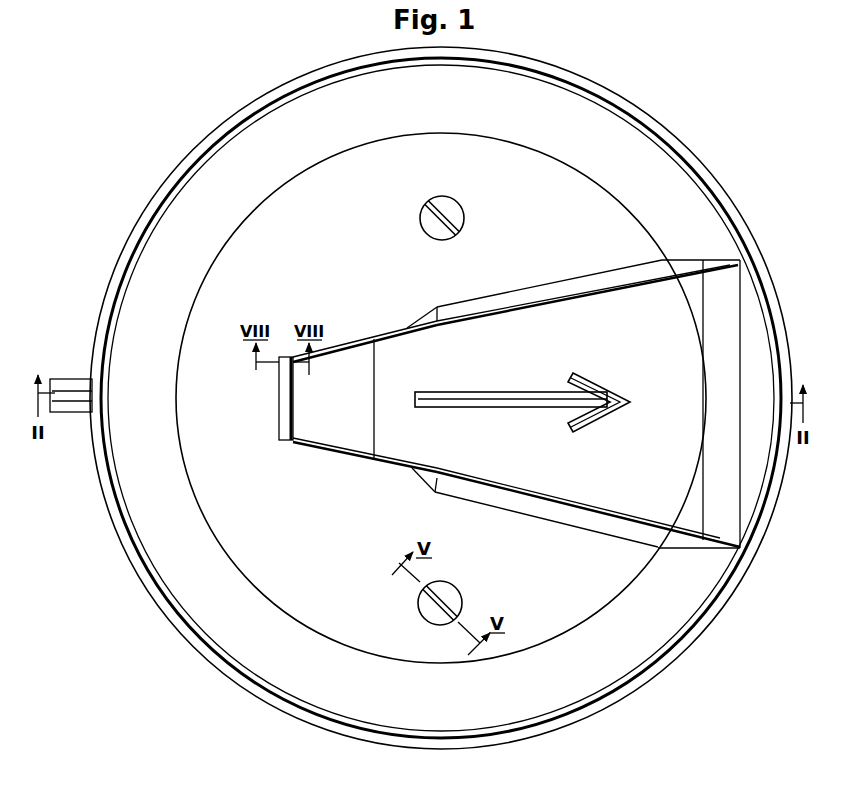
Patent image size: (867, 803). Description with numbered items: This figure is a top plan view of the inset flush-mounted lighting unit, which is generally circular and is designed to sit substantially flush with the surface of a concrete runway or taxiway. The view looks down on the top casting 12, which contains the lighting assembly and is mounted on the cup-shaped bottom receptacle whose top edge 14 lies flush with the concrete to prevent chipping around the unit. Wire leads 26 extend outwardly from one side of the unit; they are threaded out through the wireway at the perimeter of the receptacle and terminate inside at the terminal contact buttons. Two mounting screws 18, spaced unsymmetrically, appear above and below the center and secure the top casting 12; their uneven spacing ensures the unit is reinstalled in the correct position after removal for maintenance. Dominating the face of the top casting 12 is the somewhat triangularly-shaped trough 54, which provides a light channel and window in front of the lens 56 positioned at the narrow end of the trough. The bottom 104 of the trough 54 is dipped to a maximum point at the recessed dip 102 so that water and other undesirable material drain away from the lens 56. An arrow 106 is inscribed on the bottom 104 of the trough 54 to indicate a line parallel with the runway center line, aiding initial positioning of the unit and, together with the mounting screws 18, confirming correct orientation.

The top casting 12 is at (220, 637).
The top edge 14 is at (165, 607).
The mounting screws 18 is at (453, 207).
The wire leads 26 is at (70, 404).
The trough or cavity 54 is at (692, 308).
The lens 56 is at (284, 412).
The recessed dip 102 is at (374, 412).
The bottom of the trough 104 is at (582, 500).
The arrow 106 is at (505, 397).